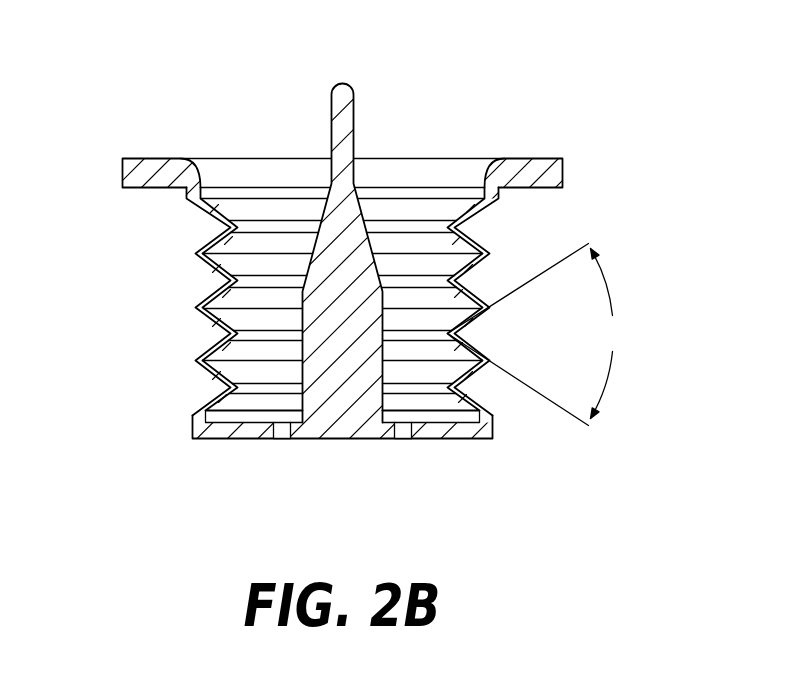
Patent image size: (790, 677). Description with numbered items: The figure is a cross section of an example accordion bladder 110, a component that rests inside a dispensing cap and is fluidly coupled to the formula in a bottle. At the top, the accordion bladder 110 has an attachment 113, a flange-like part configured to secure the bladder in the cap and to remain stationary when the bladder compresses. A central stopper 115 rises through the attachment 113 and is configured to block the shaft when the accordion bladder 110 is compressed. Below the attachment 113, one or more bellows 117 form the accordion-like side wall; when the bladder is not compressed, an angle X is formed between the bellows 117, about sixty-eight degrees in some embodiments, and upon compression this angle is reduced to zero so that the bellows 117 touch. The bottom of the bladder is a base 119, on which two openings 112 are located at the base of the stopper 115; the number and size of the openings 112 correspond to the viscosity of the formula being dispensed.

The accordion bladder 110 is at (395, 258).
The opening 112 is at (283, 439).
The attachment 113 is at (133, 168).
The stopper 115 is at (348, 112).
The bellows 117 is at (197, 227).
The base 119 is at (197, 421).